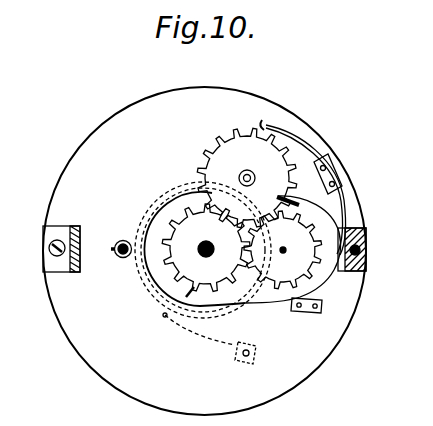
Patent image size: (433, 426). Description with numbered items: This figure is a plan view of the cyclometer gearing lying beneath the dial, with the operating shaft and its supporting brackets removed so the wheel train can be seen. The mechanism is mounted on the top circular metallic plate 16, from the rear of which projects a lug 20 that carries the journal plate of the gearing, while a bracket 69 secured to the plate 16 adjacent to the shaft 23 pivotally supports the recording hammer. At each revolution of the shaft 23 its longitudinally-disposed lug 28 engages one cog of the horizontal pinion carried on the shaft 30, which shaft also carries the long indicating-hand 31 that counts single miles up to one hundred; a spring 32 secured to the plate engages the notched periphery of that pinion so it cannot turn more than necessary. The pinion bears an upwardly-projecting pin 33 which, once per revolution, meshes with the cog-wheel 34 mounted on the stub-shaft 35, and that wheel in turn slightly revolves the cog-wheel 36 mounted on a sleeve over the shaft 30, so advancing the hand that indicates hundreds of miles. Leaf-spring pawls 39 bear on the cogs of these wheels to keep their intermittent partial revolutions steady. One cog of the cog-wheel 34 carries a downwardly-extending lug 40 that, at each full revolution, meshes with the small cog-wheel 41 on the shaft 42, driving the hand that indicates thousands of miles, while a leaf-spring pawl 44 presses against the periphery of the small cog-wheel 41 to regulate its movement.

The top circular metallic plate 16 is at (341, 333).
The lug 20 is at (368, 262).
The shaft 23 is at (116, 261).
The longitudinally-disposed lug 28 is at (119, 245).
The shaft 30 is at (205, 254).
The long indicating-hand 31 is at (212, 247).
The spring 32 is at (200, 326).
The upwardly-projecting pin 33 is at (207, 216).
The cog-wheel 34 is at (221, 148).
The stub-shaft 35 is at (250, 175).
The cog-wheel 36 is at (177, 223).
The leaf-spring pawls 39 is at (280, 136).
The downwardly-extending lug 40 is at (297, 207).
The small cog-wheel 41 is at (284, 260).
The shaft 42 is at (283, 250).
The leaf-spring pawl 44 is at (345, 213).
The bracket 69 is at (68, 272).